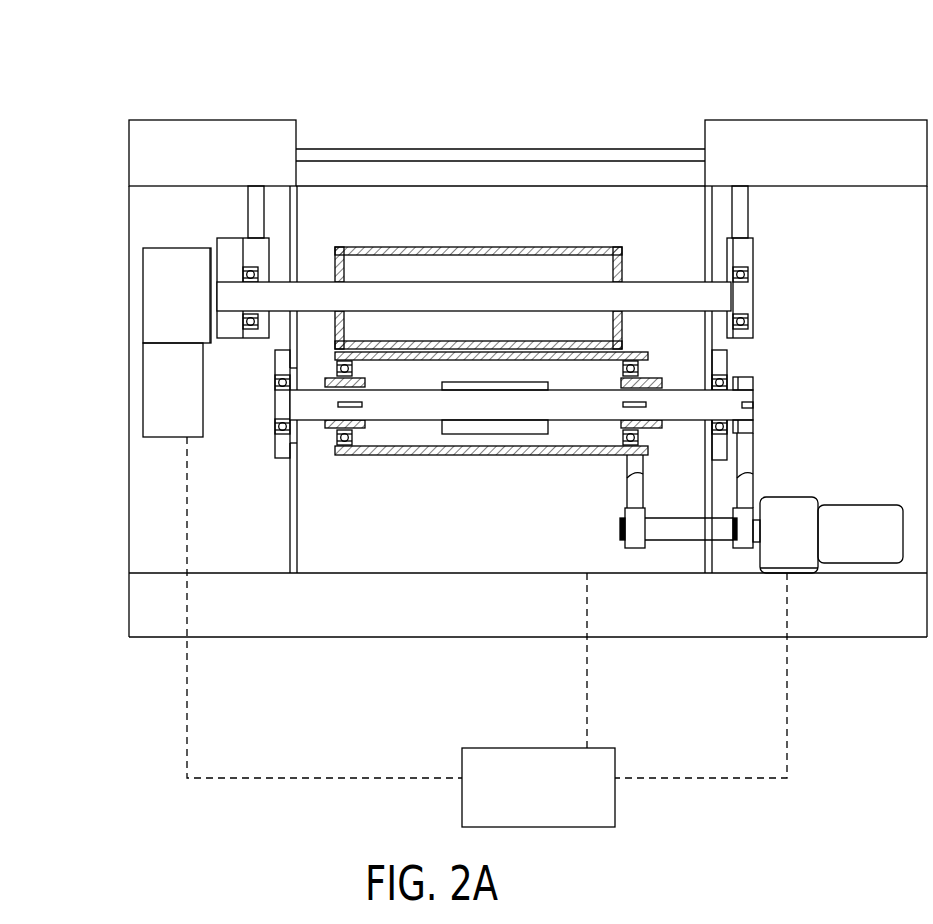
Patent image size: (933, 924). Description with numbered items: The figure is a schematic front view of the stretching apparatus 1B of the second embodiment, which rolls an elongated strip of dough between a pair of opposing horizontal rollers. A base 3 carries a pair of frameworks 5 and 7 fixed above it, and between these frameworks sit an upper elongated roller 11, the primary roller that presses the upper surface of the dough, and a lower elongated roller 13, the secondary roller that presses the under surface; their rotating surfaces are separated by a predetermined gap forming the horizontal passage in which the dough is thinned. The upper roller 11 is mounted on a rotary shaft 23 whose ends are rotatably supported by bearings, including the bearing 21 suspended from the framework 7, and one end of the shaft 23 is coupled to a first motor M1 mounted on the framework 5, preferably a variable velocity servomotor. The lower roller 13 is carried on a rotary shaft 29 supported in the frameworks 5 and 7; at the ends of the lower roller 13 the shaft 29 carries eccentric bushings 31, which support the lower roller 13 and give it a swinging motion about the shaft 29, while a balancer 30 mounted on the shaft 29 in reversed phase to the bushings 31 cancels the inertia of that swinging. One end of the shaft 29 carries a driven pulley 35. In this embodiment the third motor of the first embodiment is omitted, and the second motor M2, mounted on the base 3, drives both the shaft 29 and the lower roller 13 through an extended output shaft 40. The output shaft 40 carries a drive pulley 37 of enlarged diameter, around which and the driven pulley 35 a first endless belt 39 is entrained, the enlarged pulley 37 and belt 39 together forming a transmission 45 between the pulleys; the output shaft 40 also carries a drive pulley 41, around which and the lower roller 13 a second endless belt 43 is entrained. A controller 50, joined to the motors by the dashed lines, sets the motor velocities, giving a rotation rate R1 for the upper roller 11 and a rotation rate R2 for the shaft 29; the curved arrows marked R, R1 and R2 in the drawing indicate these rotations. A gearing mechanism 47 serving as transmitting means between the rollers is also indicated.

The stretching apparatus 1B is at (712, 110).
The base 3 is at (497, 638).
The framework 5 is at (206, 121).
The framework 7 is at (838, 122).
The upper elongated roller 11 is at (525, 247).
The lower elongated roller 13 is at (491, 456).
The bearing 21 is at (748, 272).
The rotary shaft 23 is at (444, 292).
The rotary shaft 29 is at (453, 412).
The balancer 30 is at (537, 428).
The eccentric bushings 31 is at (368, 425).
The driven pulley 35 is at (755, 426).
The drive pulley 37 is at (744, 549).
The first endless belt 39 is at (755, 460).
The extended output shaft 40 is at (680, 541).
The drive pulley 41 is at (636, 549).
The second endless belt 43 is at (638, 500).
The transmission 45 is at (768, 486).
The gearing mechanism 47 is at (321, 233).
The controller 50 is at (557, 757).
The first motor M1 is at (164, 427).
The second motor M2 is at (887, 505).
The rotation direction R is at (630, 270).
The rotation rate of the upper roller R1 is at (767, 372).
The rotation rate of the rotary shaft R2 is at (695, 393).